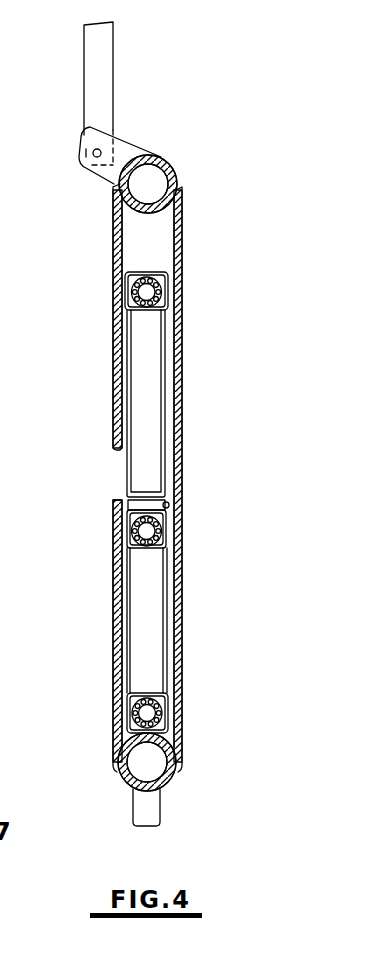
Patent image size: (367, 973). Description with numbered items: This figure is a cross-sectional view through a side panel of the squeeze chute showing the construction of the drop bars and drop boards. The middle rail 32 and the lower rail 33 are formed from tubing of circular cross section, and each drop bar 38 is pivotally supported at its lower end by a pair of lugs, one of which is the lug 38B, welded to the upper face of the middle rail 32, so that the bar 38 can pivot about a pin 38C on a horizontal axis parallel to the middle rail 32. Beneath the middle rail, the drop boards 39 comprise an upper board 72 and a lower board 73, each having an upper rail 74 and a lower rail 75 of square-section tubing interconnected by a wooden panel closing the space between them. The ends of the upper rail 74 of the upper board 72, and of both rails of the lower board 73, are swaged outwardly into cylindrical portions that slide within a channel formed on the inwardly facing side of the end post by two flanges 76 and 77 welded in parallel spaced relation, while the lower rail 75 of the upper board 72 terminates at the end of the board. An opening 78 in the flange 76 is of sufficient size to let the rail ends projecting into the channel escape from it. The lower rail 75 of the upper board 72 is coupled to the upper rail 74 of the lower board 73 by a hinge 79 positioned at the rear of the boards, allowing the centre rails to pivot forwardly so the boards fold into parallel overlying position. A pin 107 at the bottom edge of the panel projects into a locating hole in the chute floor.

The middle rail 32 is at (177, 160).
The lower rail 33 is at (173, 780).
The drop bar 38 is at (98, 63).
The lug 38B is at (125, 147).
The pin 38C is at (92, 153).
The drop board 39 is at (121, 466).
The upper board 72 is at (145, 334).
The lower board 73 is at (145, 634).
The upper rail 74 is at (152, 270).
The lower rail 75 is at (147, 491).
The flange 76 is at (112, 401).
The flange 77 is at (180, 392).
The opening 78 is at (117, 491).
The hinge 79 is at (169, 505).
The pin 107 is at (155, 807).